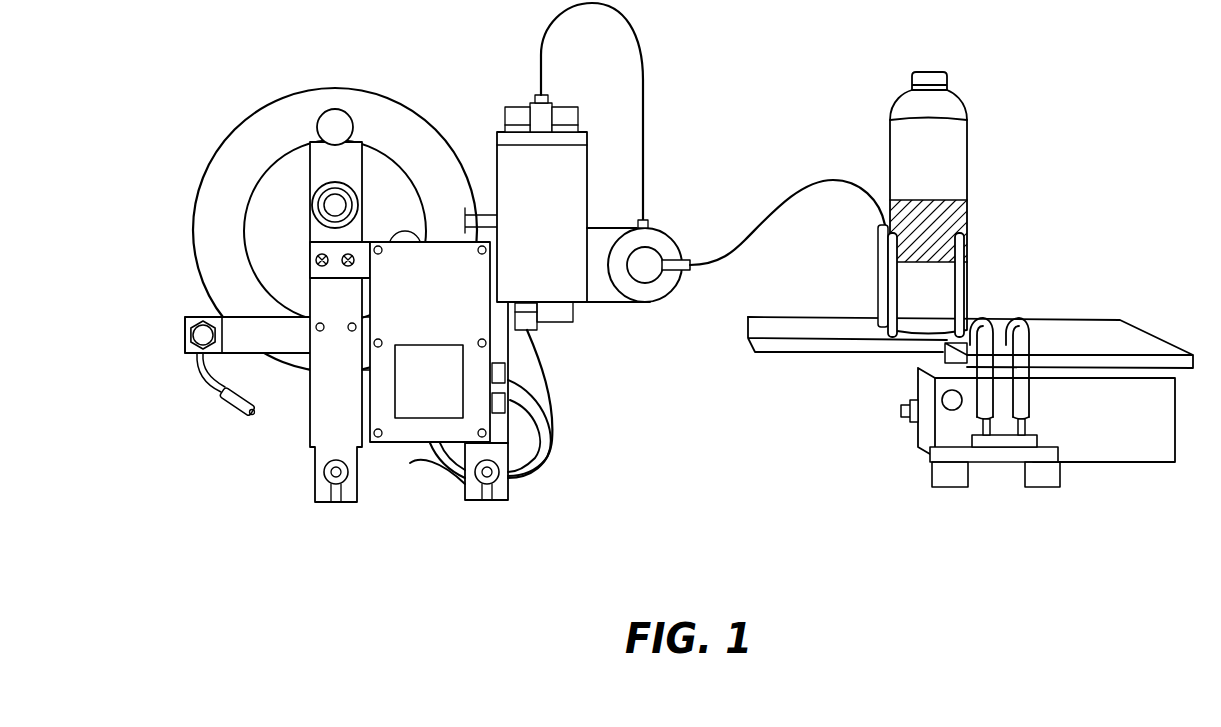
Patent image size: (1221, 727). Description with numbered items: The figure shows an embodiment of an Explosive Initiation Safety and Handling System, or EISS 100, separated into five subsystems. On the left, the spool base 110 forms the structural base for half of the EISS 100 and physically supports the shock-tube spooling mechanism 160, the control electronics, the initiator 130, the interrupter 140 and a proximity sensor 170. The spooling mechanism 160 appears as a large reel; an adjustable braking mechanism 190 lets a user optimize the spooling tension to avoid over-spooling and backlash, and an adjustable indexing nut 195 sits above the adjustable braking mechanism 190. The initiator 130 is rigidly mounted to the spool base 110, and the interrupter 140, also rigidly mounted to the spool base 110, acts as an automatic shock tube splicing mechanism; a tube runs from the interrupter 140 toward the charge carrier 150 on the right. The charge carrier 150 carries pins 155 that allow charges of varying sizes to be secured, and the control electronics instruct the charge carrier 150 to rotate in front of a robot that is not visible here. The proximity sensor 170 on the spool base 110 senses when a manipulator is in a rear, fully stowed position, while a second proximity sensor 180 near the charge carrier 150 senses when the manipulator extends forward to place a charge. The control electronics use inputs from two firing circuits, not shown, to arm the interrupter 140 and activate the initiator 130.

The Explosive Initiation Safety and Handling System (EISS) 100 is at (1090, 50).
The spool base 110 is at (332, 375).
The initiator 130 is at (570, 158).
The interrupter 140 is at (653, 270).
The charge carrier 150 is at (1058, 333).
The pins 155 is at (888, 335).
The shock-tube spooling mechanism 160 is at (404, 148).
The proximity sensor 170 is at (203, 335).
The proximity sensor 180 is at (947, 402).
The adjustable braking mechanism 190 is at (318, 192).
The adjustable indexing nut 195 is at (335, 125).